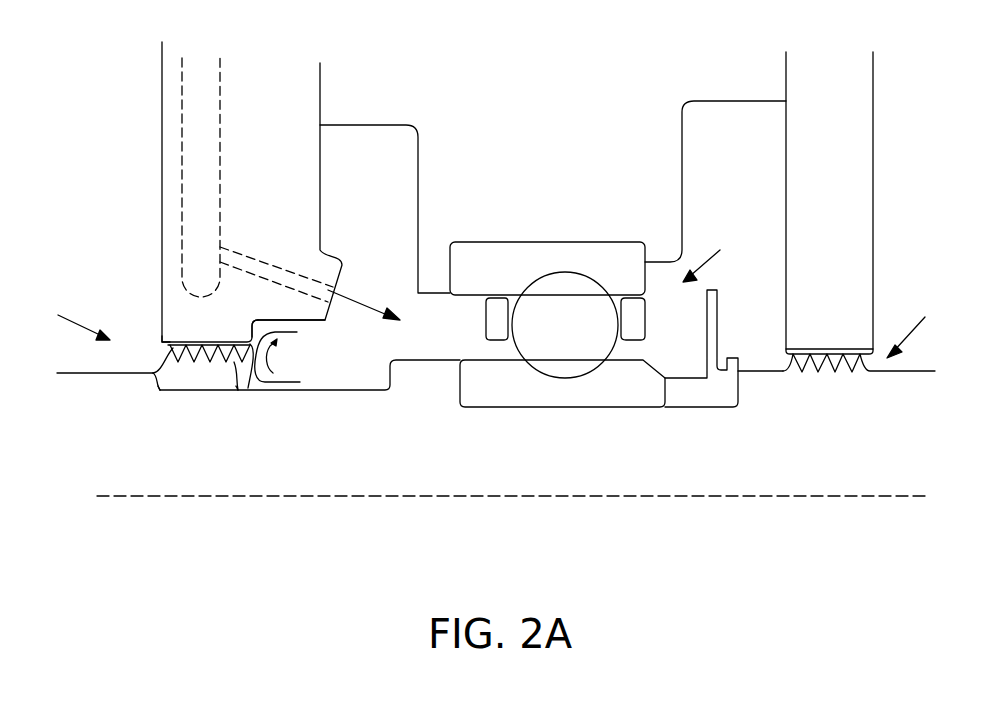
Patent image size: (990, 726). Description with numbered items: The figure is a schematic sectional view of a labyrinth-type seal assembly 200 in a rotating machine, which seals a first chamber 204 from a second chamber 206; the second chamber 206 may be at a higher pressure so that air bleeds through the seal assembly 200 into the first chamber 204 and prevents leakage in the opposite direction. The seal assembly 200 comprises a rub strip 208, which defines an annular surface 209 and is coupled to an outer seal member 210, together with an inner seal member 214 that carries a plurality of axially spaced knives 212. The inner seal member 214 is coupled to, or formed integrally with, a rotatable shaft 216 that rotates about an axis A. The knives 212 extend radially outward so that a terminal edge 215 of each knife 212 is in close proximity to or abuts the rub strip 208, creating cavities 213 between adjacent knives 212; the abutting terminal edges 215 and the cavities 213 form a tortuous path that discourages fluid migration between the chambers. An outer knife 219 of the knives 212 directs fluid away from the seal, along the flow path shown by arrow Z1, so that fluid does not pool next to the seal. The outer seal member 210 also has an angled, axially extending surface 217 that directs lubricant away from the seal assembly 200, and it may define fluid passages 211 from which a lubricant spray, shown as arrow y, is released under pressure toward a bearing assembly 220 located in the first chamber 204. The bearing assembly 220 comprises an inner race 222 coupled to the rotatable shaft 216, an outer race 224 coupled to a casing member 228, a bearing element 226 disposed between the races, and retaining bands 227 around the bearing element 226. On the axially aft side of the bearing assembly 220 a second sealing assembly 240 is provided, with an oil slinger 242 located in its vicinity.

The seal assembly 200 is at (64, 320).
The first chamber 204 is at (339, 350).
The second chamber 206 is at (43, 291).
The rub strip 208 is at (172, 340).
The annular surface 209 is at (185, 343).
The outer seal member 210 is at (245, 190).
The fluid passages 211 is at (184, 223).
The knives 212 is at (160, 392).
The cavities 213 is at (234, 392).
The inner seal member 214 is at (177, 387).
The terminal edge 215 is at (167, 350).
The rotatable shaft 216 is at (398, 455).
The axially extending surface 217 is at (267, 322).
The outer knife 219 is at (275, 333).
The bearing assembly 220 is at (719, 256).
The inner race 222 is at (476, 396).
The outer race 224 is at (468, 272).
The bearing element 226 is at (549, 332).
The retaining bands 227 is at (487, 313).
The casing member 228 is at (521, 167).
The second sealing assembly 240 is at (871, 212).
The oil slinger 242 is at (708, 395).
The fluid flow path Z1 is at (277, 373).
The lubricant spray y is at (360, 293).
The axis A is at (522, 496).